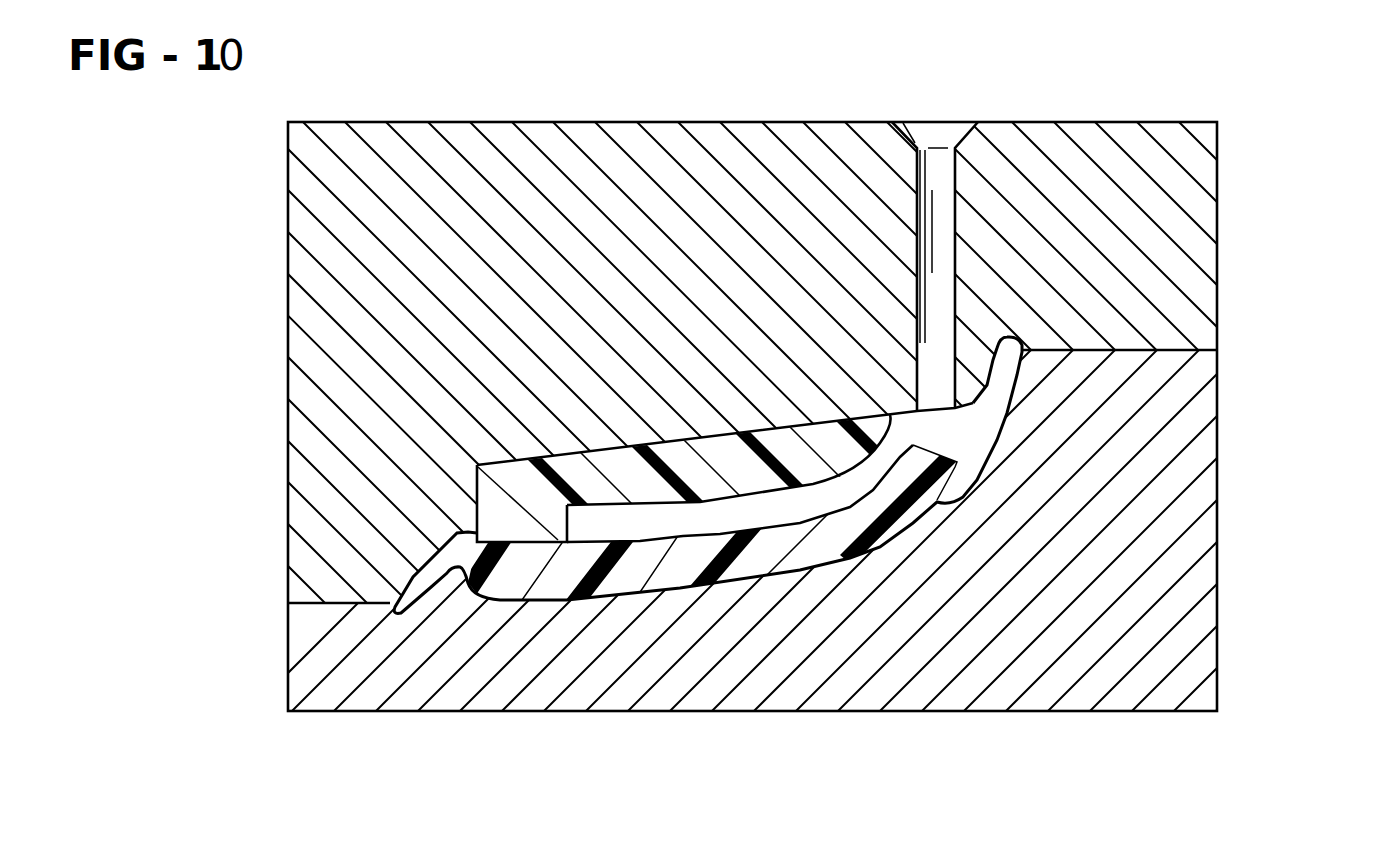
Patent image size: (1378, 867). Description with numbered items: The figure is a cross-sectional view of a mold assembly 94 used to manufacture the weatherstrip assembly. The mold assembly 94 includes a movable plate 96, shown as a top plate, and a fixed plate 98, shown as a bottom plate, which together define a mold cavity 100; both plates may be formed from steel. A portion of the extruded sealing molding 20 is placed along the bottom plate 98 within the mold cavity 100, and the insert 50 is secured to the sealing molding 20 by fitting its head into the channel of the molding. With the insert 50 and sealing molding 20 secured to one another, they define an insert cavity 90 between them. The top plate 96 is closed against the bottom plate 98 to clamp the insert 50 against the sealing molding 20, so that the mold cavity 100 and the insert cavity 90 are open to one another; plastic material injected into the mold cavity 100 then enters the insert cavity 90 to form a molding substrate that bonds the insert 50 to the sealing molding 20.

The sealing molding 20 is at (830, 558).
The insert 50 is at (477, 483).
The insert cavity 90 is at (683, 535).
The mold assembly 94 is at (1231, 327).
The movable plate 96 is at (1193, 241).
The fixed plate 98 is at (1182, 554).
The mold cavity 100 is at (973, 417).